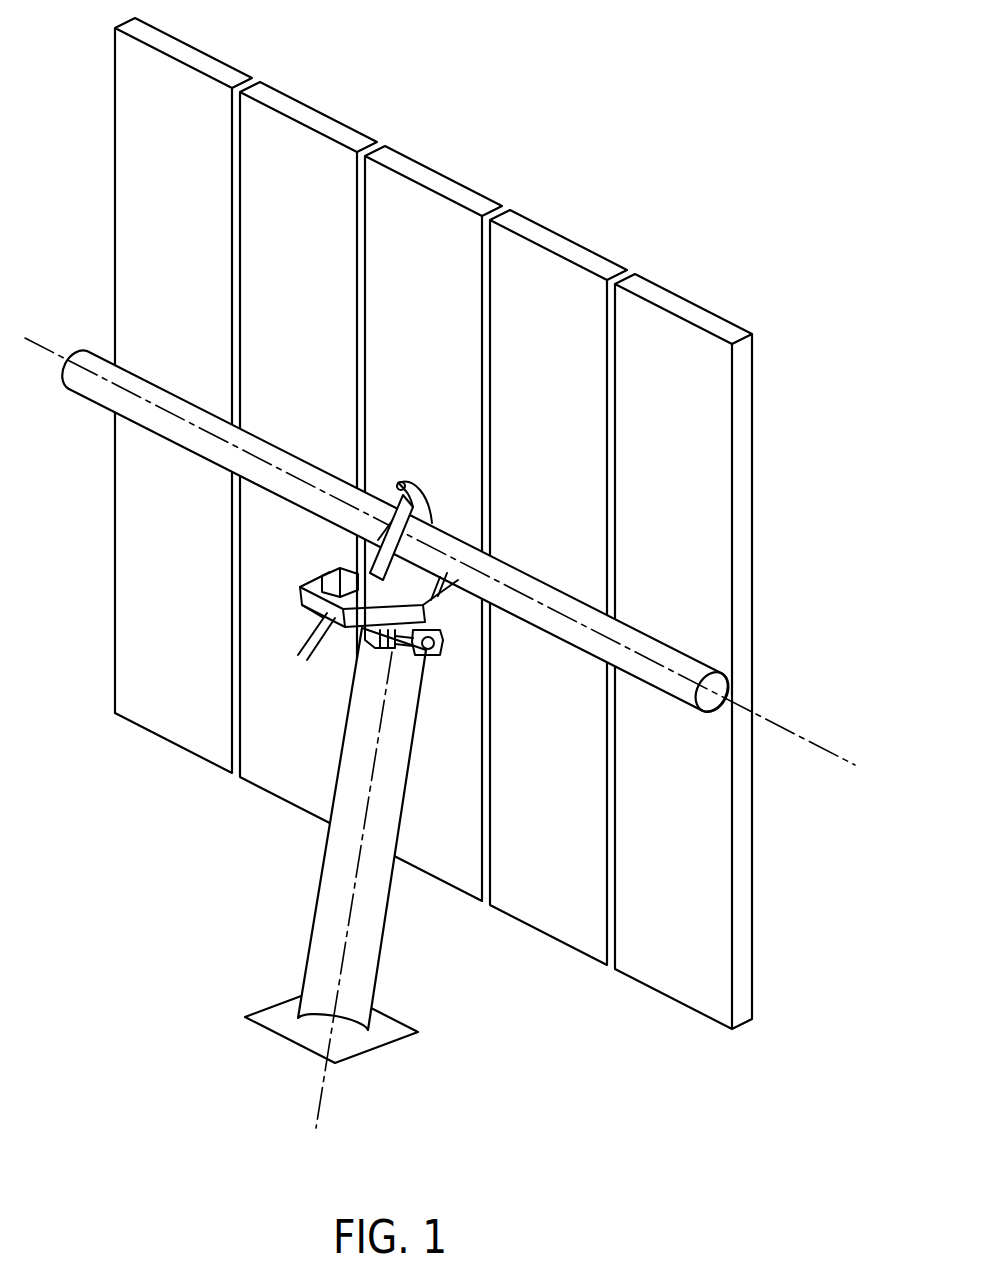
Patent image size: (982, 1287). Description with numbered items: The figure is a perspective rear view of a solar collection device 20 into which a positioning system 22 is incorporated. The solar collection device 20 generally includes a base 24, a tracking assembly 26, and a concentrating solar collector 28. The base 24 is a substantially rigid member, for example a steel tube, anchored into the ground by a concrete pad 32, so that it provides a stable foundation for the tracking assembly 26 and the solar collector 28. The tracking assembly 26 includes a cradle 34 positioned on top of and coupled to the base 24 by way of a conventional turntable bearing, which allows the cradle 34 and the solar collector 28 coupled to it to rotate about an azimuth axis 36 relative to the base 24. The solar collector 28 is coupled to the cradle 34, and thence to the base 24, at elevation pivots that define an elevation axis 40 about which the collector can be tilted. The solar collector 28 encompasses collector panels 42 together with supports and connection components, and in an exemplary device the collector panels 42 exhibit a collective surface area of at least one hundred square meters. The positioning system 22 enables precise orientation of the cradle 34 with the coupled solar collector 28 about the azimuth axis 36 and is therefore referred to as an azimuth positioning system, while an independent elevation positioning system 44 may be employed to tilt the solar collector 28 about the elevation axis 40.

The solar collection device 20 is at (440, 573).
The positioning system 22 is at (408, 657).
The base 24 is at (377, 933).
The tracking assembly 26 is at (305, 598).
The solar collector 28 is at (331, 122).
The concrete pad 32 is at (272, 1013).
The cradle 34 is at (458, 602).
The azimuth axis 36 is at (315, 1113).
The elevation axis 40 is at (800, 739).
The collector panels 42 is at (119, 196).
The elevation positioning system 44 is at (336, 558).